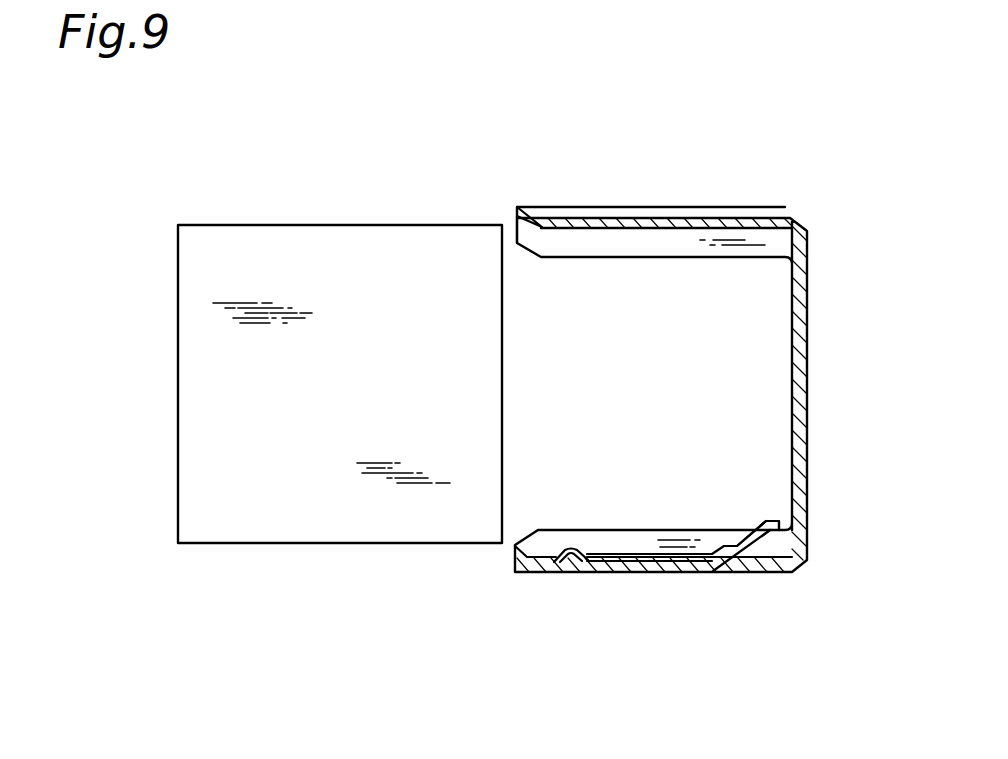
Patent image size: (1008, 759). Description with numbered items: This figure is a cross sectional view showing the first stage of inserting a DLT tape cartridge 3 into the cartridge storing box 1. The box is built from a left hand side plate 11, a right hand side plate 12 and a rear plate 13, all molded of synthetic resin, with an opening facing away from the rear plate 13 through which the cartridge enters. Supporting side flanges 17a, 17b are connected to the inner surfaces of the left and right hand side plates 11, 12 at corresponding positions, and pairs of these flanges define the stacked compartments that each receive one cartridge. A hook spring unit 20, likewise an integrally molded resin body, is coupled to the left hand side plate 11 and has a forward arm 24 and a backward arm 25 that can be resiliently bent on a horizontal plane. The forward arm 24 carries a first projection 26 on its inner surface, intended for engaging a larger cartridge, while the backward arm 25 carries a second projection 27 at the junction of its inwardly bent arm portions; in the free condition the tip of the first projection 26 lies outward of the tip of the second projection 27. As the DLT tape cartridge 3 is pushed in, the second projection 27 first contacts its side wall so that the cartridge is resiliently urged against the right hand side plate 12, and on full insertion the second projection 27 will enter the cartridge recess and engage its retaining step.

The cartridge storing box 1 is at (807, 248).
The DLT tape cartridge 3 is at (269, 224).
The left hand side plate 11 is at (528, 576).
The right hand side plate 12 is at (533, 221).
The rear plate 13 is at (805, 345).
The supporting side flange 17a is at (640, 529).
The supporting side flange 17b is at (645, 250).
The hook spring unit 20 is at (663, 573).
The forward arm 24 is at (758, 542).
The backward arm 25 is at (603, 571).
The first projection 26 is at (726, 546).
The second projection 27 is at (571, 547).